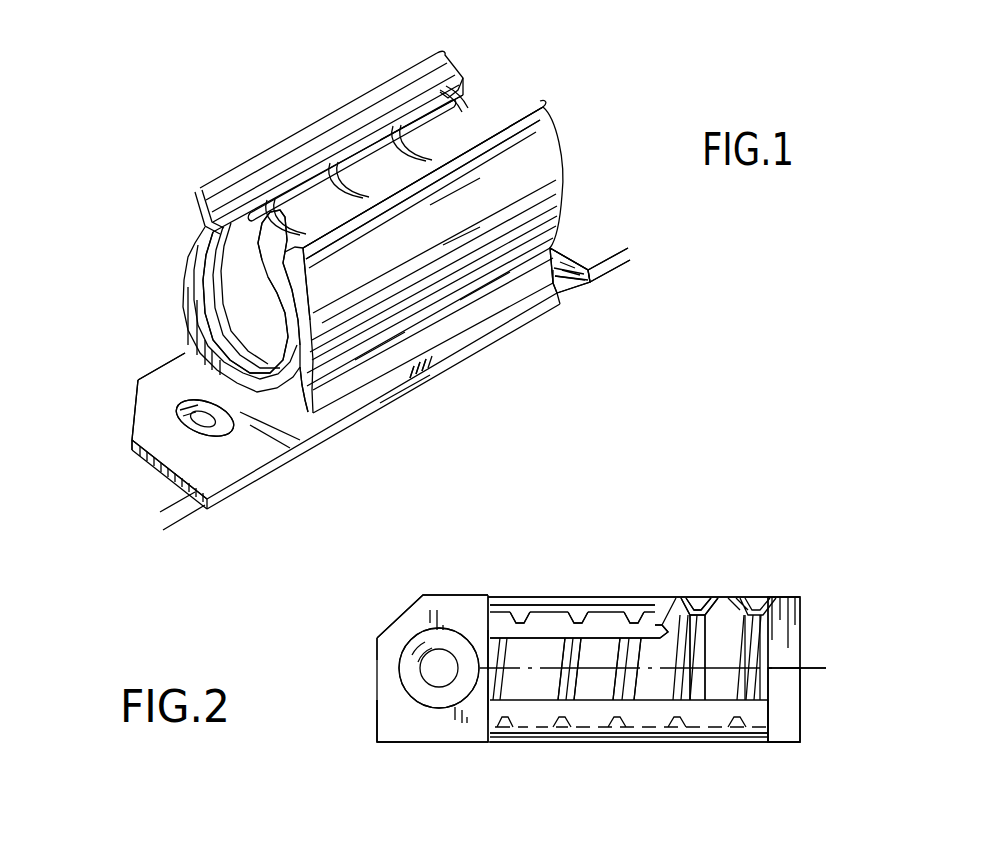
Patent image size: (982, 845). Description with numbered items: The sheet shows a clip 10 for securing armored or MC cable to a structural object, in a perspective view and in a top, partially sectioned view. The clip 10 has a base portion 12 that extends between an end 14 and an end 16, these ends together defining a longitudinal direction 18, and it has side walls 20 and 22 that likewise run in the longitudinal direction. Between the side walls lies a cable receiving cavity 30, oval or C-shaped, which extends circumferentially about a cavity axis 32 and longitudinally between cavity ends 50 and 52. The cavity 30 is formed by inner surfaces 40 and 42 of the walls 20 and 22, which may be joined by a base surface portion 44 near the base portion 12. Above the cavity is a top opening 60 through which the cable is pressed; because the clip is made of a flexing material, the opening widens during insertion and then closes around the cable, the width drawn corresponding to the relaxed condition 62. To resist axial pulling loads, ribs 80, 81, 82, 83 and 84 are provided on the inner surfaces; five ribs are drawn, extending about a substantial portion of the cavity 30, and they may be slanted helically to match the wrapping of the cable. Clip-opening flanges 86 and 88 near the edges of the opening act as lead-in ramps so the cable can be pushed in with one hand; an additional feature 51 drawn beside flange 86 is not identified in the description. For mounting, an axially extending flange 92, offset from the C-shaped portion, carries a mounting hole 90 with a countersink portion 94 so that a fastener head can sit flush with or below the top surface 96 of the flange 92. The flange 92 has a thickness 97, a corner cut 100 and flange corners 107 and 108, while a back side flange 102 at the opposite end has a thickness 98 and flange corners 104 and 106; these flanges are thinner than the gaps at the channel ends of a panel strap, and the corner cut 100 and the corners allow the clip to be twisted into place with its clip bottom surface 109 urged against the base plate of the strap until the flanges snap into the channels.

In FIG. 1, the clip 10 is at (573, 153).
In FIG. 2, the clip 10 is at (742, 510).
In FIG. 1, the base portion 12 is at (488, 363).
In FIG. 2, the base portion 12 is at (484, 592).
In FIG. 1, the end 14 is at (137, 460).
In FIG. 2, the end 14 is at (375, 667).
In FIG. 1, the end 16 is at (560, 250).
In FIG. 2, the end 16 is at (803, 618).
In FIG. 1, the longitudinal direction 18 is at (405, 392).
In FIG. 1, the side wall 20 is at (182, 288).
In FIG. 2, the side wall 20 is at (663, 592).
In FIG. 1, the side wall 22 is at (560, 182).
In FIG. 2, the side wall 22 is at (700, 745).
In FIG. 1, the cable receiving cavity 30 is at (230, 307).
In FIG. 2, the cable receiving cavity 30 is at (590, 682).
In FIG. 2, the cavity axis 32 is at (815, 665).
In FIG. 1, the inner surface 40 is at (250, 290).
In FIG. 2, the inner surface 40 is at (730, 598).
In FIG. 1, the inner surface 42 is at (320, 315).
In FIG. 2, the inner surface 42 is at (530, 730).
In FIG. 1, the base surface portion 44 is at (238, 360).
In FIG. 2, the base surface portion 44 is at (493, 650).
In FIG. 1, the cavity end 50 is at (327, 363).
In FIG. 2, the cavity end 50 is at (488, 693).
In FIG. 1, the slot 51 is at (315, 165).
In FIG. 1, the cavity end 52 is at (545, 128).
In FIG. 2, the cavity end 52 is at (770, 710).
In FIG. 1, the top opening 60 is at (487, 88).
In FIG. 2, the top opening 60 is at (647, 682).
In FIG. 2, the relaxed condition 62 is at (553, 585).
In FIG. 1, the rib 80 is at (225, 270).
In FIG. 2, the rib 80 is at (521, 613).
In FIG. 1, the rib 81 is at (292, 195).
In FIG. 2, the rib 81 is at (580, 612).
In FIG. 1, the rib 82 is at (345, 165).
In FIG. 2, the rib 82 is at (633, 612).
In FIG. 1, the rib 83 is at (400, 130).
In FIG. 2, the rib 83 is at (688, 612).
In FIG. 1, the rib 84 is at (455, 82).
In FIG. 2, the rib 84 is at (760, 600).
In FIG. 1, the clip-opening flange 86 is at (222, 180).
In FIG. 2, the clip-opening flange 86 is at (606, 610).
In FIG. 1, the clip-opening flange 88 is at (543, 108).
In FIG. 2, the clip-opening flange 88 is at (577, 737).
In FIG. 1, the mounting hole 90 is at (217, 427).
In FIG. 2, the mounting hole 90 is at (423, 680).
In FIG. 1, the axially extending flange 92 is at (268, 440).
In FIG. 2, the axially extending flange 92 is at (403, 728).
In FIG. 1, the countersink portion 94 is at (167, 400).
In FIG. 2, the countersink portion 94 is at (428, 693).
In FIG. 1, the top surface 96 is at (283, 432).
In FIG. 2, the top surface 96 is at (387, 722).
In FIG. 1, the thickness 97 is at (172, 486).
In FIG. 1, the thickness 98 is at (613, 234).
In FIG. 1, the corner cut 100 is at (133, 405).
In FIG. 2, the corner cut 100 is at (403, 613).
In FIG. 1, the back side flange 102 is at (567, 272).
In FIG. 2, the back side flange 102 is at (790, 689).
In FIG. 2, the flange corner 104 is at (800, 597).
In FIG. 1, the flange corner 106 is at (590, 267).
In FIG. 2, the flange corner 106 is at (800, 742).
In FIG. 1, the flange corner 107 is at (130, 442).
In FIG. 2, the flange corner 107 is at (375, 640).
In FIG. 1, the flange corner 108 is at (207, 500).
In FIG. 2, the flange corner 108 is at (375, 742).
In FIG. 1, the clip bottom surface 109 is at (407, 393).